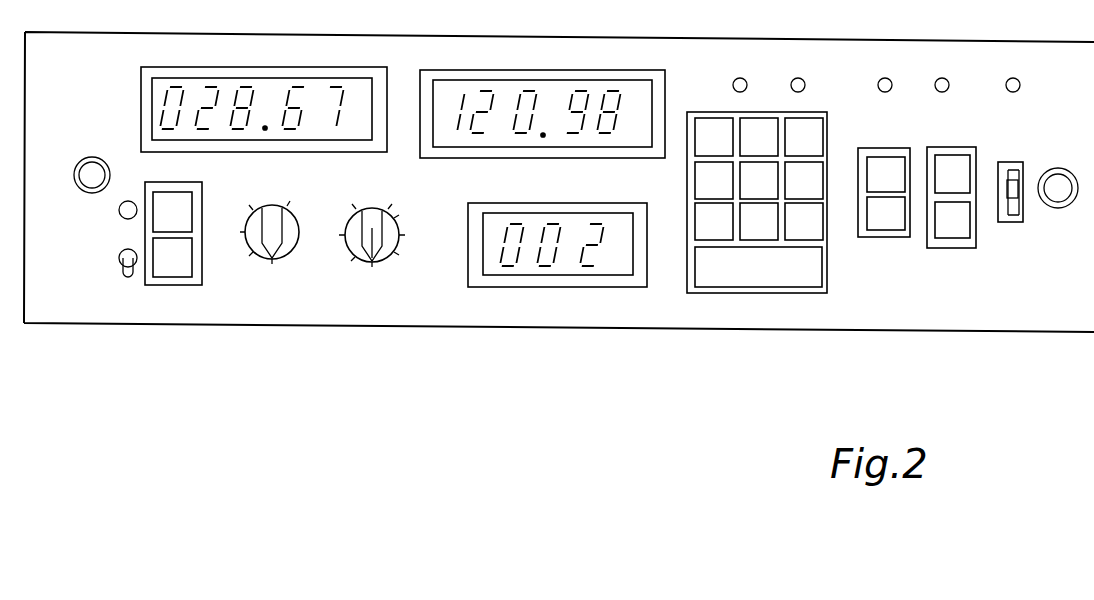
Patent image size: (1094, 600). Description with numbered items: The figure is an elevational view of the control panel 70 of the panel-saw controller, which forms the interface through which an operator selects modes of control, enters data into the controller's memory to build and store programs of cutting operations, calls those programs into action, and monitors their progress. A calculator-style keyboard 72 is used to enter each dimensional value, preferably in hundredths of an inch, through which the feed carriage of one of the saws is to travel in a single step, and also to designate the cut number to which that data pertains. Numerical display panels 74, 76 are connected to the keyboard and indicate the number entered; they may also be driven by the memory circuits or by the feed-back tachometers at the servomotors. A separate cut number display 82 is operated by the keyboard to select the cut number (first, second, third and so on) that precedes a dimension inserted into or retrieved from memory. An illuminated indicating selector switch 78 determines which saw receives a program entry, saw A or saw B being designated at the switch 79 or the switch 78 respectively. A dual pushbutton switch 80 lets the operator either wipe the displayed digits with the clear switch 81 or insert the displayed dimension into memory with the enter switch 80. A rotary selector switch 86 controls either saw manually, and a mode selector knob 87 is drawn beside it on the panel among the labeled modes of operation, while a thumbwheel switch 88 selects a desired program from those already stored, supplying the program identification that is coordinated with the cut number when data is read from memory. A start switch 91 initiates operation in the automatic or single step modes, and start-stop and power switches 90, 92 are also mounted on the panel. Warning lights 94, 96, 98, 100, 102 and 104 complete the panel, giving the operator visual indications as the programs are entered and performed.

The control panel 70 is at (1090, 303).
The keyboard 72 is at (827, 247).
The numerical display panel 74 is at (330, 70).
The numerical display panel 76 is at (598, 72).
The illuminated indicating selector switch 78 is at (955, 238).
The saw A switch 79 is at (958, 158).
The enter switch 80 is at (878, 228).
The clear switch 81 is at (878, 160).
The cut number display panel 82 is at (478, 207).
The rotary selector switch 86 is at (262, 210).
The mode selector knob 87 is at (364, 210).
The thumbwheel switch 88 is at (1015, 215).
The start-stop switch 90 is at (178, 271).
The start switch 91 is at (176, 198).
The power switch 92 is at (121, 270).
The warning light 94 is at (733, 85).
The warning light 96 is at (805, 85).
The warning light 98 is at (885, 92).
The warning light 100 is at (942, 92).
The warning light 102 is at (1020, 85).
The warning light 104 is at (119, 210).